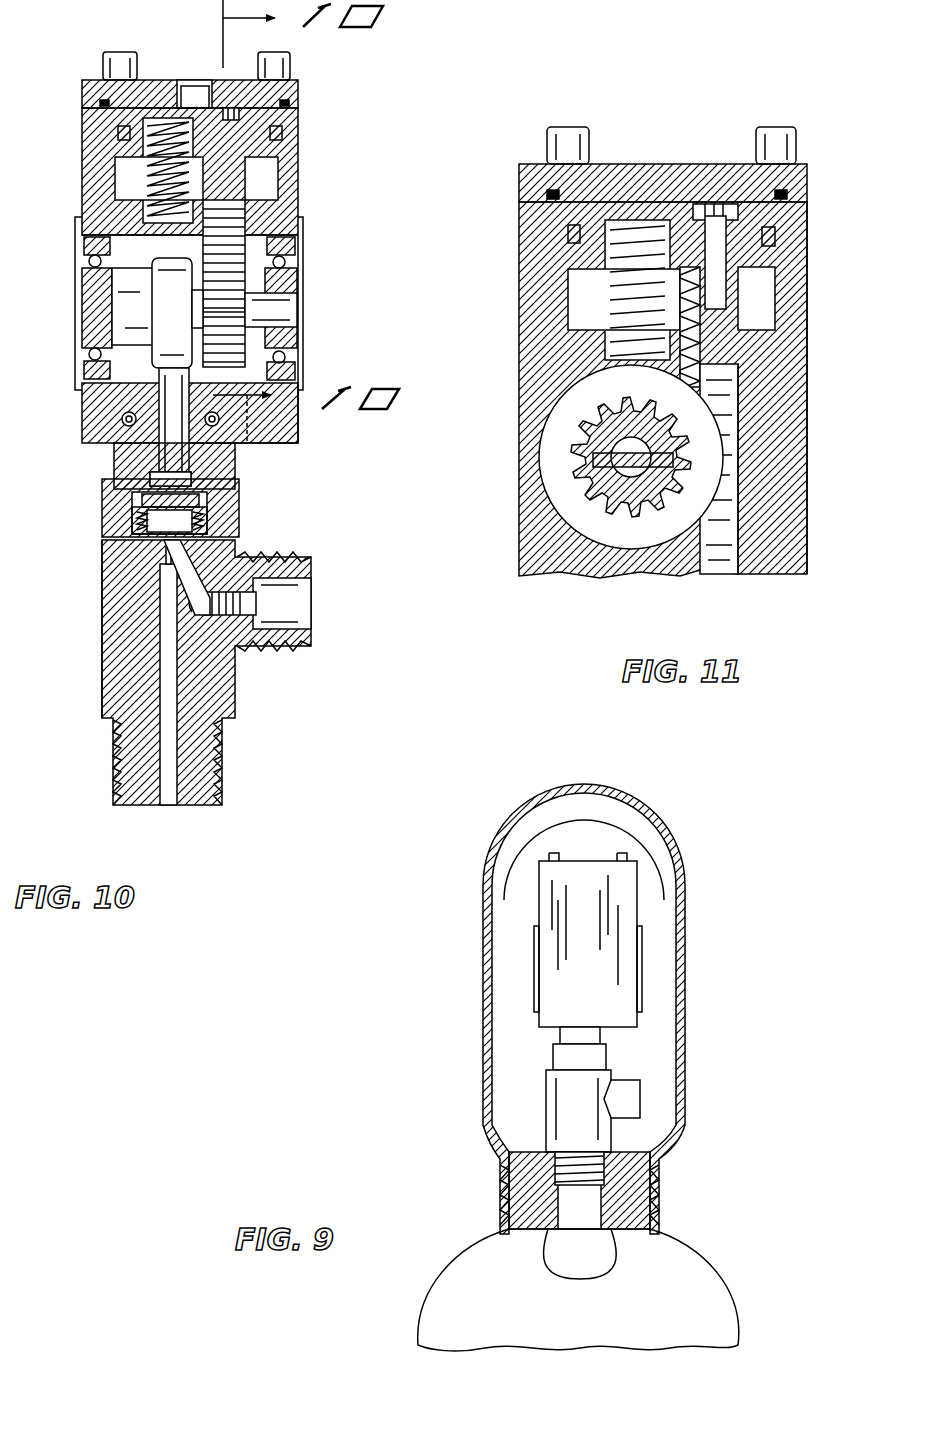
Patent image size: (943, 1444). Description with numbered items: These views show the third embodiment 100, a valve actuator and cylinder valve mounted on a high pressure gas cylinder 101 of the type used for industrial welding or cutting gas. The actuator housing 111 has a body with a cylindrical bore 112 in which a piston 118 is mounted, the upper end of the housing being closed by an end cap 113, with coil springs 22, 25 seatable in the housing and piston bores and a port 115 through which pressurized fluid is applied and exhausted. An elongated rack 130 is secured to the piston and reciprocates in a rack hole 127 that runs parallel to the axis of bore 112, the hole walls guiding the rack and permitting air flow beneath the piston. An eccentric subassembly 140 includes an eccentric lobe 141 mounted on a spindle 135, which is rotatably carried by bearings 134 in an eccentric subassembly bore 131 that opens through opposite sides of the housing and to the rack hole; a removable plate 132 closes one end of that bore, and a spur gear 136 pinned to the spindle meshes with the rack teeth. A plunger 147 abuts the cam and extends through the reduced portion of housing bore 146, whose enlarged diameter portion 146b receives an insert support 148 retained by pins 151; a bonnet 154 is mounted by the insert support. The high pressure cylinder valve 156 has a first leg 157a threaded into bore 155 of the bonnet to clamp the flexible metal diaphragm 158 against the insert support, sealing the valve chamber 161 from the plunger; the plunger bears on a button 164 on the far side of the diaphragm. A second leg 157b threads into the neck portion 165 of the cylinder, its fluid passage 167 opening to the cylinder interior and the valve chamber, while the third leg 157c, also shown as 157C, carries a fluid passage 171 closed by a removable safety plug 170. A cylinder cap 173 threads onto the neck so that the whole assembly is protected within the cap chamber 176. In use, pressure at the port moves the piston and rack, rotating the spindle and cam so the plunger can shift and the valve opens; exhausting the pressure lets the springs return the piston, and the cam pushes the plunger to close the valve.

In FIG. 10, the cap 113 is at (97, 82).
In FIG. 11, the cap 113 is at (619, 174).
In FIG. 10, the port 115 is at (190, 80).
In FIG. 10, the actuator housing 111 is at (95, 135).
In FIG. 11, the actuator housing 111 is at (533, 230).
In FIG. 10, the coil spring 22 is at (145, 168).
In FIG. 11, the coil spring 25 is at (607, 295).
In FIG. 10, the piston 118 is at (284, 148).
In FIG. 11, the piston 118 is at (768, 256).
In FIG. 10, the cylindrical bore 112 is at (280, 188).
In FIG. 11, the cylindrical bore 112 is at (777, 292).
In FIG. 10, the rack 130 is at (245, 230).
In FIG. 11, the rack 130 is at (719, 430).
In FIG. 10, the eccentric subassembly bore 131 is at (85, 210).
In FIG. 11, the eccentric subassembly bore 131 is at (540, 453).
In FIG. 10, the bearings 134 is at (290, 272).
In FIG. 10, the plate 132 is at (300, 345).
In FIG. 10, the spur gear 136 is at (240, 312).
In FIG. 10, the spindle 135 is at (290, 320).
In FIG. 11, the spindle 135 is at (626, 443).
In FIG. 10, the eccentric subassembly 140 is at (143, 285).
In FIG. 11, the eccentric subassembly 140 is at (580, 495).
In FIG. 10, the eccentric lobe 141 is at (170, 305).
In FIG. 10, the housing bore 146 is at (150, 390).
In FIG. 10, the pins 151 is at (120, 417).
In FIG. 10, the rack hole 127 is at (290, 423).
In FIG. 11, the rack hole 127 is at (738, 525).
In FIG. 10, the enlarged diameter portion 146b is at (280, 441).
In FIG. 10, the plunger 147 is at (193, 465).
In FIG. 10, the insert support 148 is at (130, 447).
In FIG. 10, the bore 155 is at (105, 492).
In FIG. 10, the diaphragm 158 is at (217, 508).
In FIG. 10, the button 164 is at (217, 483).
In FIG. 10, the bonnet 154 is at (107, 518).
In FIG. 10, the valve chamber 161 is at (193, 527).
In FIG. 10, the high pressure cylinder valve 156 is at (242, 698).
In FIG. 9, the high pressure cylinder valve 156 is at (534, 1106).
In FIG. 10, the first leg 157a is at (132, 543).
In FIG. 10, the third leg 157c is at (290, 646).
In FIG. 9, the third leg 157C is at (630, 1099).
In FIG. 10, the fluid passage 171 is at (298, 625).
In FIG. 10, the safety plug 170 is at (250, 600).
In FIG. 10, the fluid passage 167 is at (180, 748).
In FIG. 10, the second leg 157b is at (205, 775).
In FIG. 9, the second leg 157b is at (592, 1183).
In FIG. 11, the third embodiment 100 is at (819, 386).
In FIG. 9, the cylinder cap 173 is at (683, 911).
In FIG. 9, the cap chamber 176 is at (604, 822).
In FIG. 9, the neck portion 165 is at (630, 1207).
In FIG. 9, the gas cylinder 101 is at (412, 1310).